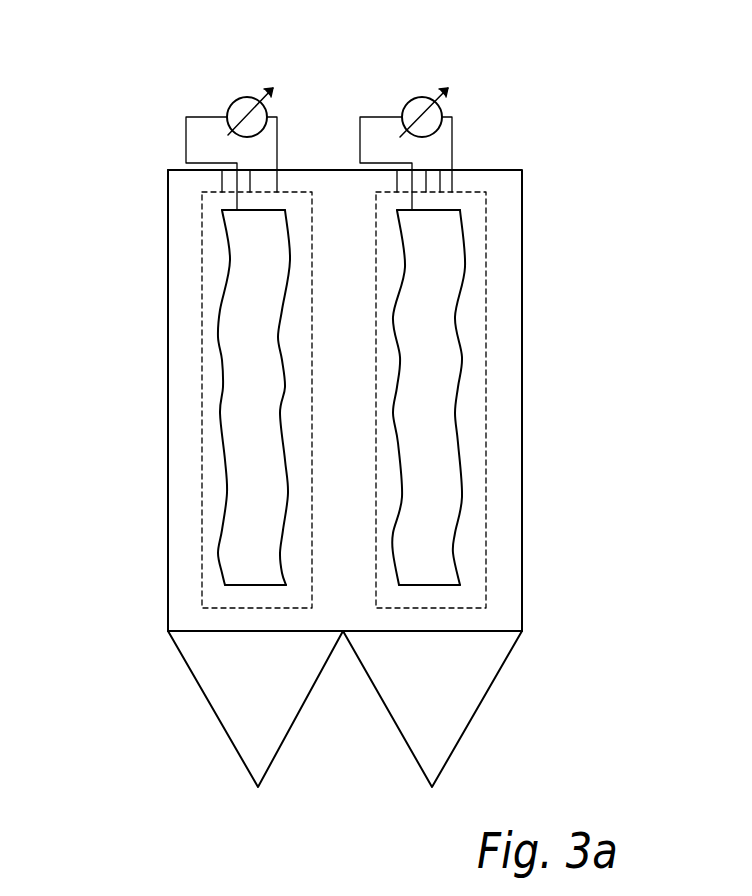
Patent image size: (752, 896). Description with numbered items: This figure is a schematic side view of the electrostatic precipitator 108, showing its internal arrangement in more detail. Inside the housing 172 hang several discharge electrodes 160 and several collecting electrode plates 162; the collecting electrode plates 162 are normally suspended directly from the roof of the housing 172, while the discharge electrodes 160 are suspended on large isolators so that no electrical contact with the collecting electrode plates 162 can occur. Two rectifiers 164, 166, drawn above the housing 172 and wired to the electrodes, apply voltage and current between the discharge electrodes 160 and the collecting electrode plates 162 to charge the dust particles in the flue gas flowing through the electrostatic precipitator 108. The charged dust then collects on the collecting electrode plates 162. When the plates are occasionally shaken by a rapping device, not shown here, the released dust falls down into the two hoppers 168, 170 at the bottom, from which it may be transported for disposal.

The electrostatic precipitator 108 is at (528, 297).
The discharge electrode 160 is at (218, 337).
The collecting electrode plate 162 is at (202, 562).
The rectifier 164 is at (248, 97).
The rectifier 166 is at (422, 97).
The hopper 168 is at (283, 743).
The hopper 170 is at (498, 670).
The housing 172 is at (168, 230).